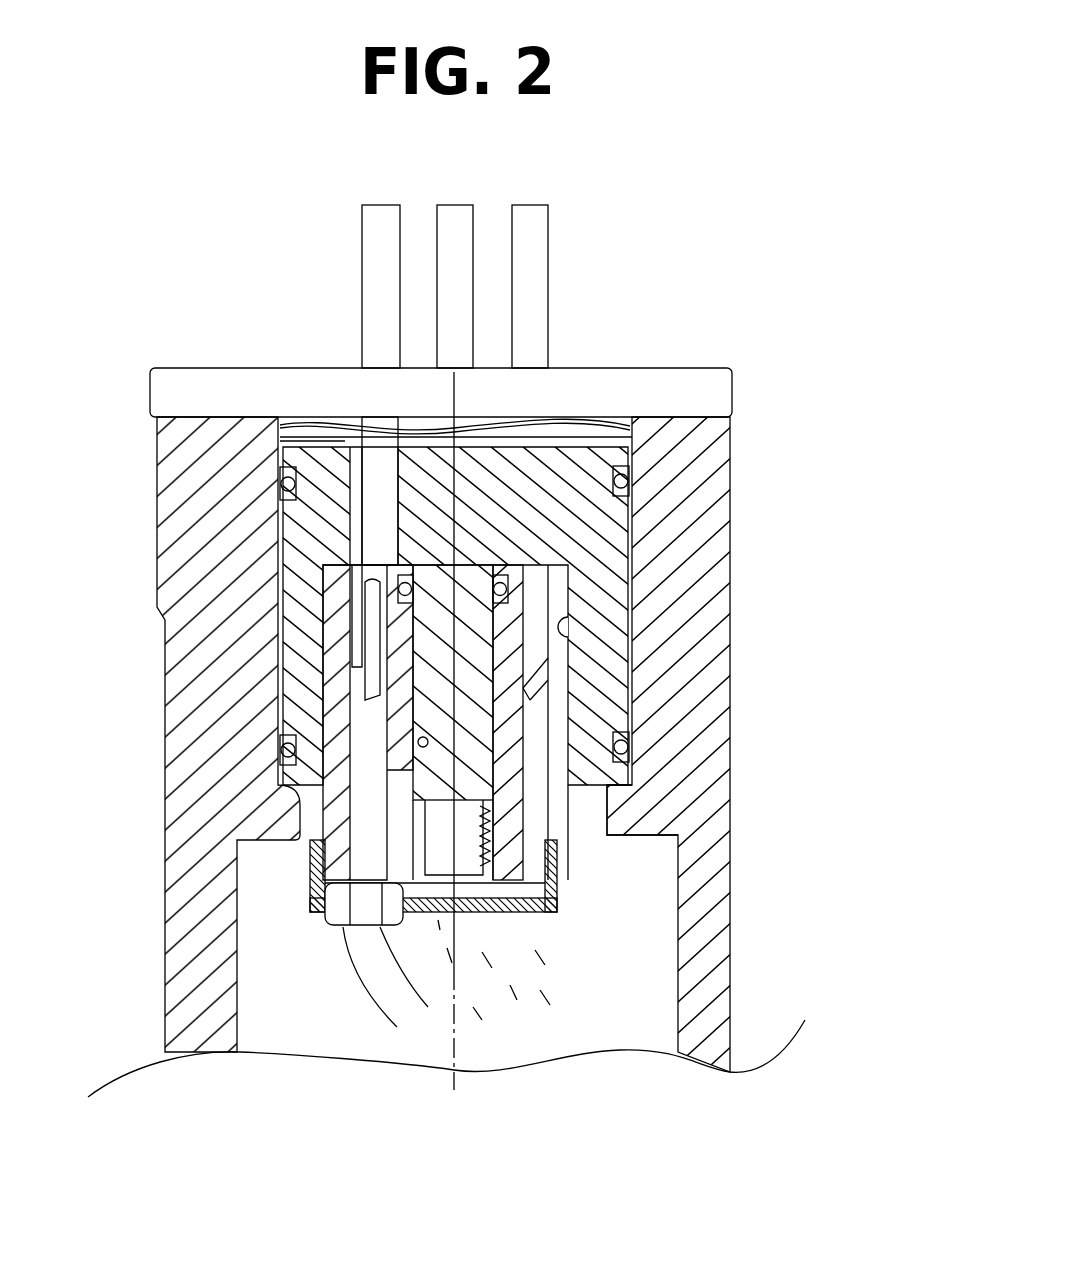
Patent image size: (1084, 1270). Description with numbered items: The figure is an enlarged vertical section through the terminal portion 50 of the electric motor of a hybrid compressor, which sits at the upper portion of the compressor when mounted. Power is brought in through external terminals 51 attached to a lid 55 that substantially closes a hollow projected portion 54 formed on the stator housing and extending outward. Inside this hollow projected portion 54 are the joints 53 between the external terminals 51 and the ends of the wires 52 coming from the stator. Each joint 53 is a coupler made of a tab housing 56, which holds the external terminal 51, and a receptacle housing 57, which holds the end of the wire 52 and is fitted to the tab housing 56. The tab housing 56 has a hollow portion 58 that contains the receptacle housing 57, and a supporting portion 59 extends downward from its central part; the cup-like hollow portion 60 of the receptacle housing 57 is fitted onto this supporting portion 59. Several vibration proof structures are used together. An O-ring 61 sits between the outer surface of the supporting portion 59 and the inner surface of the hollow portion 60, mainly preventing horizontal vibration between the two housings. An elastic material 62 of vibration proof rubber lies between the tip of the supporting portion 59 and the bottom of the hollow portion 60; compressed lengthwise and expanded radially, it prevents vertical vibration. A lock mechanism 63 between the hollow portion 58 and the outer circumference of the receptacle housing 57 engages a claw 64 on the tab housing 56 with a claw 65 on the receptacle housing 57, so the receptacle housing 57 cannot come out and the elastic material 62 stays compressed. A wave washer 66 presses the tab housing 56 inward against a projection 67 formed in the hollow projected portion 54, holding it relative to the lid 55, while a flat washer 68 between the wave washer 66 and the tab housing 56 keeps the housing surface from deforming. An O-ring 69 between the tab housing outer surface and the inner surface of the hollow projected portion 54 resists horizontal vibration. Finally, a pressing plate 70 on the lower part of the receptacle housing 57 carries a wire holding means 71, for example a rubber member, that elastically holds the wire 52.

The terminal portion 50 is at (513, 738).
The external terminal 51 is at (535, 248).
The wire 52 is at (385, 985).
The joint 53 is at (332, 765).
The hollow projected portion 54 is at (716, 697).
The lid 55 is at (224, 392).
The tab housing 56 is at (600, 598).
The receptacle housing 57 is at (537, 812).
The hollow portion 58 is at (570, 632).
The supporting portion 59 is at (415, 712).
The hollow portion 60 is at (420, 742).
The O-ring 61 is at (505, 578).
The elastic material 62 is at (478, 860).
The lock mechanism 63 is at (730, 722).
The claw 64 is at (548, 680).
The claw 65 is at (553, 660).
The wave washer 66 is at (447, 422).
The projection 67 is at (613, 803).
The flat washer 68 is at (300, 436).
The O-ring 69 is at (628, 468).
The pressing plate 70 is at (558, 910).
The wire holding means 71 is at (335, 922).